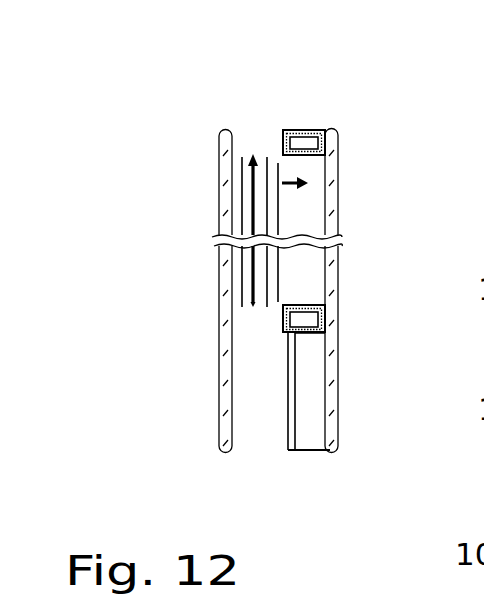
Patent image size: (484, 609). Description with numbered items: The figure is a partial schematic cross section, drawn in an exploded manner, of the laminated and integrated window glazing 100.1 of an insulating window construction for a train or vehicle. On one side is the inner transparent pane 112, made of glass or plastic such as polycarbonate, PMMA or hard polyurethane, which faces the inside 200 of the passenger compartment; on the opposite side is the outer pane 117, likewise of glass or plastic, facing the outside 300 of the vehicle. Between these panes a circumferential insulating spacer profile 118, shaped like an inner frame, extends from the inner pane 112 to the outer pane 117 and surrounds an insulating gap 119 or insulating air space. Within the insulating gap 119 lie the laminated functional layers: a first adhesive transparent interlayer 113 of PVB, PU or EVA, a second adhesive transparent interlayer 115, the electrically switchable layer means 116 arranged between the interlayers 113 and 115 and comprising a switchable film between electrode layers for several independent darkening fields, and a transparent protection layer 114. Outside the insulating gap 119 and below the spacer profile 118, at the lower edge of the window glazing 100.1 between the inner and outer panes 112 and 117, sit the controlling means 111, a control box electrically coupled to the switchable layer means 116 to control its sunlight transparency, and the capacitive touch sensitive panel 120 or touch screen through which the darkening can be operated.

The laminated and integrated window glazing 100.1 is at (351, 452).
The controlling means 111 is at (305, 447).
The inner transparent pane 112 is at (216, 137).
The first transparent interlayer 113 is at (242, 178).
The transparent protection layer 114 is at (281, 163).
The second adhesive transparent interlayer 115 is at (268, 292).
The electrically switchable layer means 116 is at (258, 215).
The outer pane 117 is at (335, 373).
The circumferential insulating spacer profile 118 is at (313, 133).
The insulating gap 119 is at (302, 212).
The capacitive touch sensitive panel 120 is at (290, 385).
The inside 200 is at (70, 178).
The outside 300 is at (427, 178).